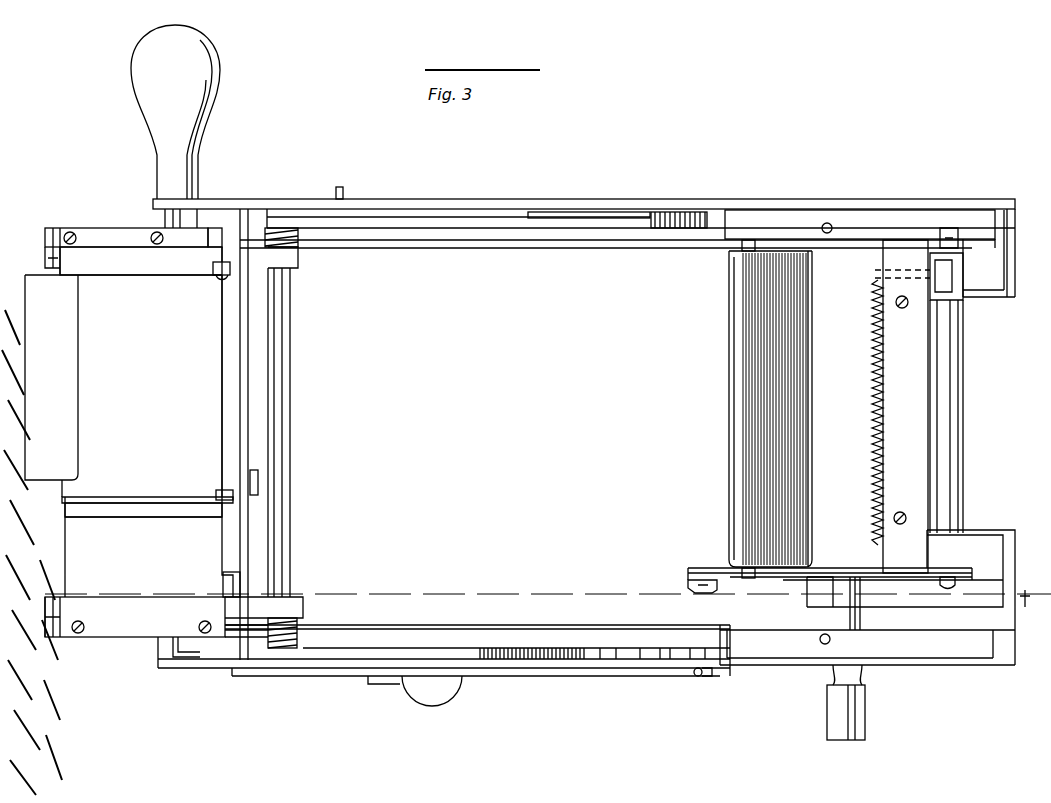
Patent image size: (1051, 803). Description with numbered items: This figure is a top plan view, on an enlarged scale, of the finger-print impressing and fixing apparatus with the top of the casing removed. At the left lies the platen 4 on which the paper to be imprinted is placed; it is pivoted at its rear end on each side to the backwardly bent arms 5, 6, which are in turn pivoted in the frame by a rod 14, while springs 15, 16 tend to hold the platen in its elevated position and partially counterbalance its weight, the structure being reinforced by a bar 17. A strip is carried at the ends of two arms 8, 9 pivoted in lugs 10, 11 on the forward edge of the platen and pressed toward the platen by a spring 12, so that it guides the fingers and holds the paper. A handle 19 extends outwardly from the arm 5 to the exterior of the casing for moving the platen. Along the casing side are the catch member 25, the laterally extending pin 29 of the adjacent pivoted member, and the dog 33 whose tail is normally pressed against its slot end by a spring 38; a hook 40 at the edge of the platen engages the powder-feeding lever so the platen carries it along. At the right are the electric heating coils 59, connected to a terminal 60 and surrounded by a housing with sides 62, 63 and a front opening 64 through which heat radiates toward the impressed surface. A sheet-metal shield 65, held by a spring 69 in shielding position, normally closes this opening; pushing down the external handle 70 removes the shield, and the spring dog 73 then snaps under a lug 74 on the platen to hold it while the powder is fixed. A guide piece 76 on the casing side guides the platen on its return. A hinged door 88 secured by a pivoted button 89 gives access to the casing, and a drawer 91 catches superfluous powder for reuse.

The platen 4 is at (161, 456).
The arm 5 is at (45, 260).
The arm 6 is at (60, 597).
The arm 8 is at (102, 276).
The arm 9 is at (132, 482).
The lug 10 is at (215, 268).
The lug 11 is at (218, 492).
The spring 12 is at (258, 497).
The rod 14 is at (290, 353).
The spring 15 is at (300, 240).
The spring 16 is at (298, 642).
The bar 17 is at (600, 176).
The handle 19 is at (165, 125).
The catch member 25 is at (298, 212).
The pin 29 is at (347, 196).
The dog 33 is at (537, 183).
The spring 38 is at (613, 212).
The hook 40 is at (213, 228).
The electric heating coils 59 is at (876, 443).
The terminal 60 is at (958, 286).
The housing side 62 is at (856, 540).
The housing side 63 is at (872, 226).
The opening 64 is at (742, 440).
The shield 65 is at (728, 383).
The spring 69 is at (957, 378).
The handle 70 is at (852, 705).
The spring dog 73 is at (697, 592).
The lug 74 is at (240, 586).
The guide piece 76 is at (587, 652).
The hinged door 88 is at (497, 676).
The pivoted button 89 is at (425, 695).
The drawer 91 is at (440, 248).